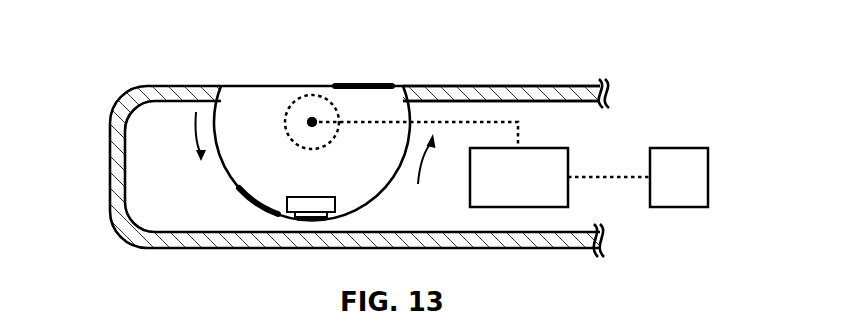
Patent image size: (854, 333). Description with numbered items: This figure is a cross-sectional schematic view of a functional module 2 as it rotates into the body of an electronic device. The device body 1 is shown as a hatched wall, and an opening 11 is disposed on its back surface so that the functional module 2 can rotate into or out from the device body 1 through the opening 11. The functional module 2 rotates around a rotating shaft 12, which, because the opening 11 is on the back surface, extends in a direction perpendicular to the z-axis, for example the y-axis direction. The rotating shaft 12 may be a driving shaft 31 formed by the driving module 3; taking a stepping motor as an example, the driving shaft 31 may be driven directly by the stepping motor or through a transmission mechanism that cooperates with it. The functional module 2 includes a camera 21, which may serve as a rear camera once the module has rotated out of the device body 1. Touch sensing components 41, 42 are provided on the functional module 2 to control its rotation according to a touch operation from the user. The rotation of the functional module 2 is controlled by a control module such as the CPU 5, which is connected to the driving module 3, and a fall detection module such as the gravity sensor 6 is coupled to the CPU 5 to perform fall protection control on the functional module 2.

The device body 1 is at (117, 192).
The opening 11 is at (406, 80).
The functional module 2 is at (243, 157).
The rotating shaft 12 is at (306, 118).
The driving shaft 31 is at (259, 92).
The driving module 3 is at (316, 100).
The touch sensing component 41 is at (348, 83).
The touch sensing component 42 is at (250, 205).
The camera 21 is at (327, 203).
The CPU 5 is at (548, 153).
The gravity sensor 6 is at (692, 153).